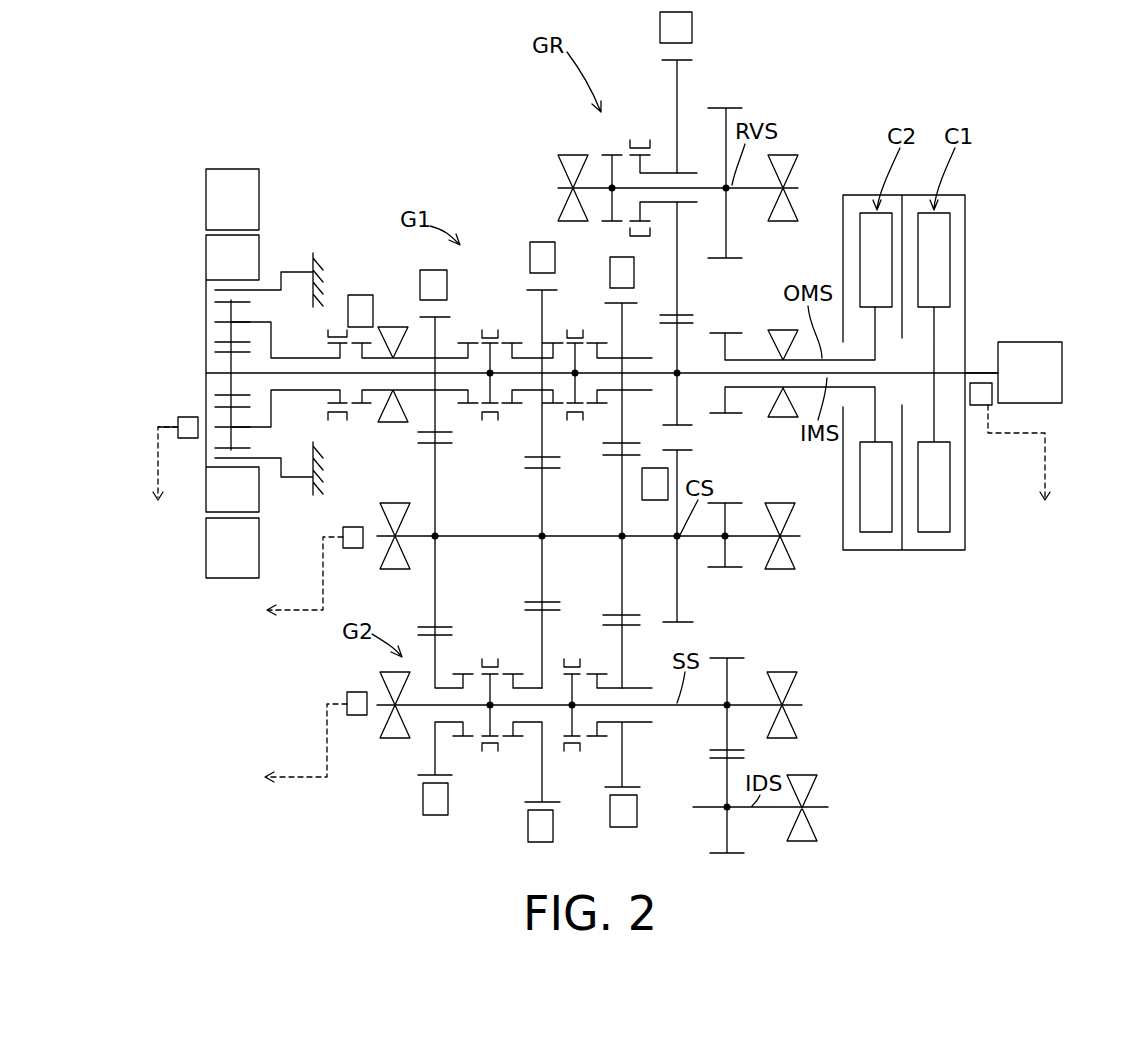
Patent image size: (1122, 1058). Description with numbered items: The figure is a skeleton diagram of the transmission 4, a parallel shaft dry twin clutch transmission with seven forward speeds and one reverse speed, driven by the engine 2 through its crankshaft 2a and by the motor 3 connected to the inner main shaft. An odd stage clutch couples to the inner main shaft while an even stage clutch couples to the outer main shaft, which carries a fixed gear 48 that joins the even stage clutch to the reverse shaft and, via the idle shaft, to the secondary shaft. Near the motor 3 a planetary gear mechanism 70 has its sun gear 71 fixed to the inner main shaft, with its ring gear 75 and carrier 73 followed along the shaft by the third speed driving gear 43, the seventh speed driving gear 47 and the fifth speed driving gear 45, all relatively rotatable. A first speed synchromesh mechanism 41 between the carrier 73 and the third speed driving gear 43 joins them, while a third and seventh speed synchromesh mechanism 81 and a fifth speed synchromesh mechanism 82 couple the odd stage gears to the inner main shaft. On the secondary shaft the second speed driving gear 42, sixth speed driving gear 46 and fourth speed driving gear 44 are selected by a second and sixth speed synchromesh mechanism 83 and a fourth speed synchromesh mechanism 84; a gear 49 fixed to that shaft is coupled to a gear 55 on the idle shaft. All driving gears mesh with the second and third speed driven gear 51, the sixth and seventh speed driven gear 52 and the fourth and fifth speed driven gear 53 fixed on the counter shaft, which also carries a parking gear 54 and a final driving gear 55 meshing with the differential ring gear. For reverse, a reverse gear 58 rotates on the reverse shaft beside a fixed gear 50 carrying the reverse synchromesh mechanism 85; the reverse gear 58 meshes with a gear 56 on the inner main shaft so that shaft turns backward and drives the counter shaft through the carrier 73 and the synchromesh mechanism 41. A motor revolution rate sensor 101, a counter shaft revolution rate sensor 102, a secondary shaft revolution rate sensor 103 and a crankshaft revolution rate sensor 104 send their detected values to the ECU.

The engine 2 is at (1030, 342).
The crankshaft 2a is at (976, 370).
The motor 3 is at (235, 149).
The transmission 4 is at (831, 92).
The 1-speed synchromesh mechanism 41 is at (342, 312).
The 2-speed driving gear 42 is at (450, 777).
The 3-speed driving gear 43 is at (440, 314).
The 4-speed driving gear 44 is at (630, 787).
The 5-speed driving gear 45 is at (627, 302).
The 6-speed driving gear 46 is at (548, 800).
The 7-speed driving gear 47 is at (530, 290).
The gear fixed to the outer main shaft 48 is at (738, 415).
The gear fixed to the secondary shaft 49 is at (737, 658).
The gear fixed to the reverse shaft 50 is at (740, 107).
The 2-3-speed driven gear 51 is at (445, 447).
The 6-7-speed driven gear 52 is at (553, 470).
The 4-5-speed driven gear 53 is at (620, 484).
The parking gear 54 is at (684, 620).
The final driving gear 55 is at (740, 503).
The gear in the inner main shaft 56 is at (688, 319).
The reverse gear 58 is at (690, 60).
The planetary gear mechanism 70 is at (204, 303).
The sun gear 71 is at (260, 397).
The carrier 73 is at (273, 342).
The ring gear 75 is at (268, 288).
The 3-7-speed synchromesh mechanism 81 is at (492, 328).
The 5-speed synchromesh mechanism 82 is at (578, 328).
The 2-6-speed synchromesh mechanism 83 is at (490, 658).
The 4-speed synchromesh mechanism 84 is at (574, 658).
The reverse synchromesh mechanism 85 is at (640, 140).
The motor revolution rate sensor 101 is at (178, 421).
The counter shaft revolution rate sensor 102 is at (354, 549).
The secondary shaft revolution rate sensor 103 is at (356, 716).
The crankshaft revolution rate sensor 104 is at (980, 407).